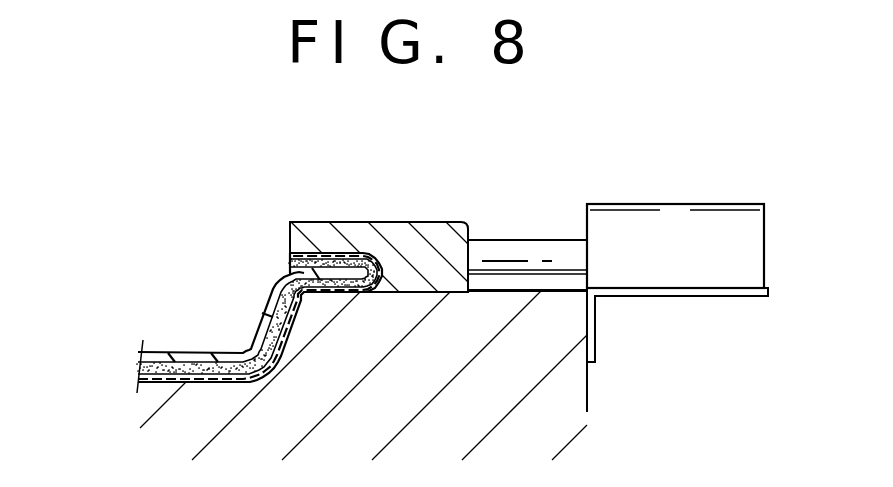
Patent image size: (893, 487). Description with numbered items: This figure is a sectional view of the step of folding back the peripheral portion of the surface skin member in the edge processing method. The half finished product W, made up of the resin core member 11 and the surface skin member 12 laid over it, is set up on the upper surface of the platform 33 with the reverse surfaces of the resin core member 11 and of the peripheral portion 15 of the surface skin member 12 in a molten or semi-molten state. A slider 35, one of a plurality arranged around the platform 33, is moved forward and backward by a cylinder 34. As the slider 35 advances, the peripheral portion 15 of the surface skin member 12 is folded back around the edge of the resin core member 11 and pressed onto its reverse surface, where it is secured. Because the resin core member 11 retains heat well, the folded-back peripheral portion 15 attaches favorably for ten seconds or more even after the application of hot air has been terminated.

The resin core member 11 is at (175, 352).
The surface skin member 12 is at (283, 327).
The peripheral portion 15 is at (338, 262).
The platform 33 is at (503, 372).
The cylinder 34 is at (623, 230).
The slider 35 is at (343, 190).
The half finished product W is at (232, 306).